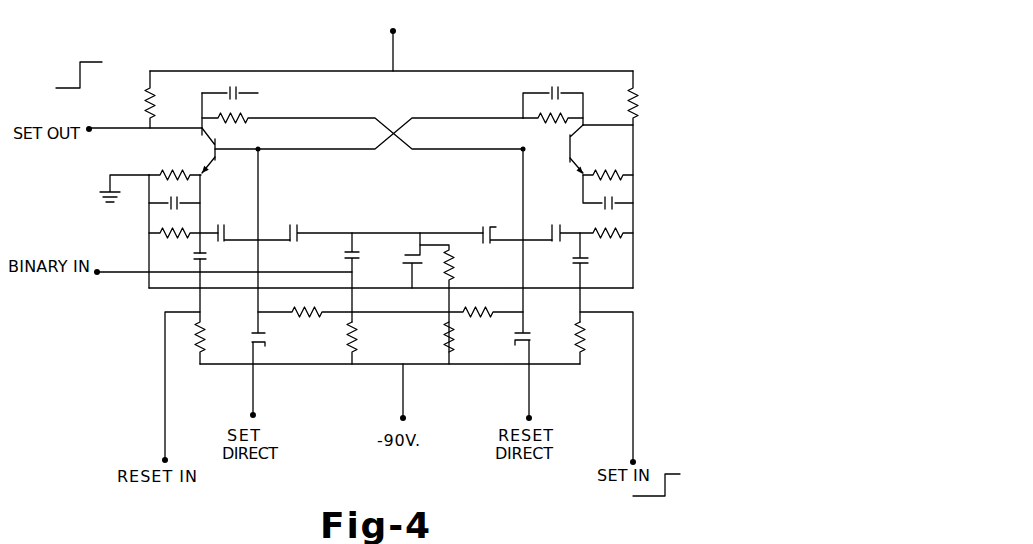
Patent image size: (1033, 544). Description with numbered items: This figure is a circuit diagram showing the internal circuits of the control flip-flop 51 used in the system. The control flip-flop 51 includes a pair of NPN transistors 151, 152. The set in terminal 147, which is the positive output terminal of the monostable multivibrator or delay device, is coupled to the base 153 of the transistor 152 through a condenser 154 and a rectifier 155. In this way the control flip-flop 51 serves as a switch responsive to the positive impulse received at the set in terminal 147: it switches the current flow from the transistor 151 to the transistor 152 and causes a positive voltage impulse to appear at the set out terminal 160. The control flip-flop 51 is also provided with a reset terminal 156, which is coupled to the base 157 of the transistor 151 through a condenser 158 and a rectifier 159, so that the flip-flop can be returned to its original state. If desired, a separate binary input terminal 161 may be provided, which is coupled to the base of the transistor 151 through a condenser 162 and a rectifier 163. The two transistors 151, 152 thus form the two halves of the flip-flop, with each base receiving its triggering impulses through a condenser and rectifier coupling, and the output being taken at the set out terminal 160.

The control flip-flop 51 is at (688, 106).
The set in terminal 147 is at (634, 448).
The transistor 151 is at (218, 146).
The transistor 152 is at (582, 165).
The base 153 is at (568, 142).
The condenser 154 is at (592, 262).
The rectifier 155 is at (561, 225).
The reset terminal 156 is at (163, 456).
The base 157 is at (217, 153).
The condenser 158 is at (195, 257).
The rectifier 159 is at (225, 225).
The set out terminal 160 is at (92, 127).
The binary input terminal 161 is at (100, 277).
The condenser 162 is at (360, 255).
The rectifier 163 is at (287, 225).